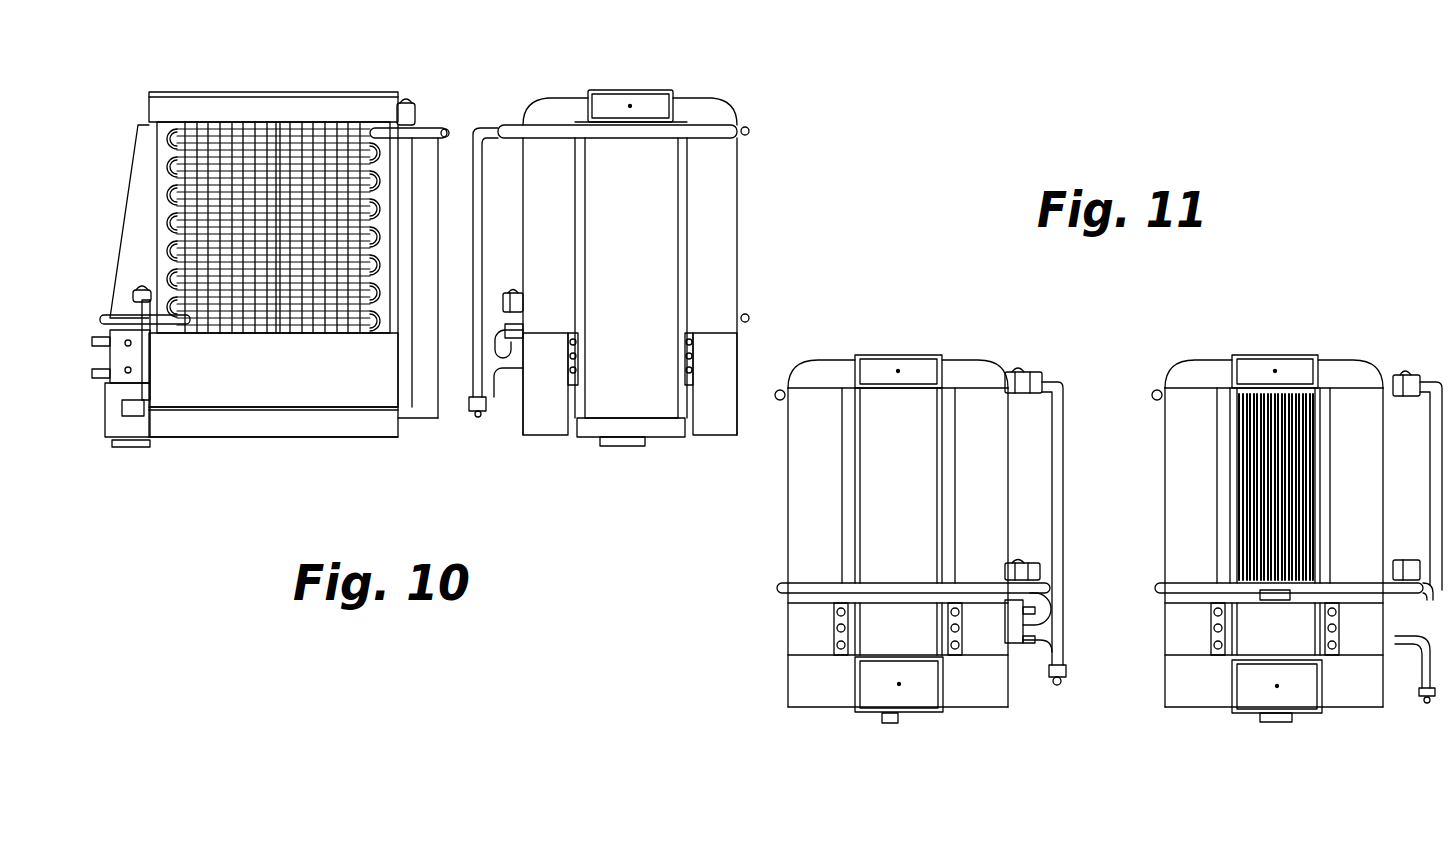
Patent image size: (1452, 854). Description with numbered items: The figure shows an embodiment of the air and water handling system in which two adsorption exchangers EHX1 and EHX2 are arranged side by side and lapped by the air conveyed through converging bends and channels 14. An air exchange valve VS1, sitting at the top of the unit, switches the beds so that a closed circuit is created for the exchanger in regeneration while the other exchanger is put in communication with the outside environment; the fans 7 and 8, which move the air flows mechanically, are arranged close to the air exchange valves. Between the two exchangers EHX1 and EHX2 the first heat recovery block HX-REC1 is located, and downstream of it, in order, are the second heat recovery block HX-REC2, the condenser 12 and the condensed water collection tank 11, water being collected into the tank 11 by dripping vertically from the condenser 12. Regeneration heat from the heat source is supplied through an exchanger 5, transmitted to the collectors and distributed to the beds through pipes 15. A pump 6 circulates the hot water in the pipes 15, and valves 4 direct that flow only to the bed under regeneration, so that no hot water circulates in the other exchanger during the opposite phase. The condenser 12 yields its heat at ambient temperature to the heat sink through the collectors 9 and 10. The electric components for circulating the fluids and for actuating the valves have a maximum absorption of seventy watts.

In FIG. 10, the valves 4 is at (520, 297).
In FIG. 11, the valves 4 is at (1030, 378).
In FIG. 10, the exchanger 5 is at (520, 365).
In FIG. 11, the exchanger 5 is at (1015, 622).
In FIG. 10, the pump 6 is at (478, 412).
In FIG. 11, the pump 6 is at (1436, 690).
In FIG. 11, the fan 7 is at (1283, 603).
In FIG. 10, the fan 8 is at (630, 445).
In FIG. 11, the fan 8 is at (902, 720).
In FIG. 10, the collector 9 is at (94, 333).
In FIG. 11, the collector 9 is at (821, 612).
In FIG. 10, the collector 10 is at (90, 386).
In FIG. 11, the collector 10 is at (820, 645).
In FIG. 10, the condensed water collection tank 11 is at (266, 420).
In FIG. 11, the condenser 12 is at (891, 640).
In FIG. 10, the converging bends and channels 14 is at (135, 243).
In FIG. 11, the converging bends and channels 14 is at (968, 368).
In FIG. 11, the pipes 15 is at (1057, 493).
In FIG. 10, the air exchange valve VS1 is at (645, 112).
In FIG. 11, the first exchanger EHX1 is at (833, 438).
In FIG. 11, the second exchanger EHX2 is at (985, 418).
In FIG. 11, the first heat recovery block HX-REC1 is at (1252, 430).
In FIG. 11, the second heat recovery block HX-REC2 is at (831, 630).